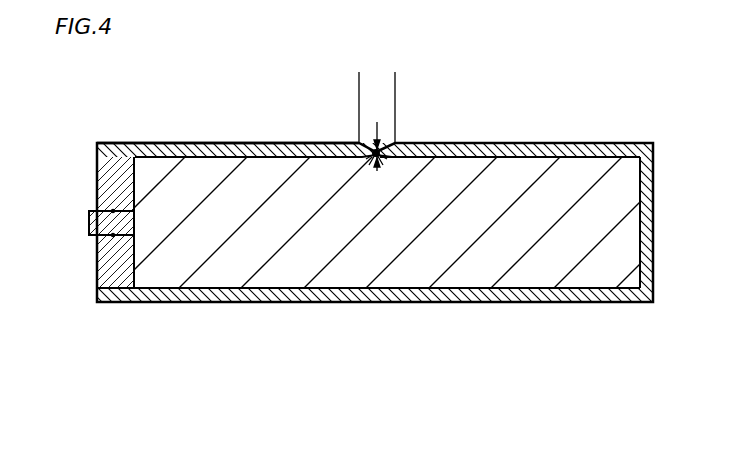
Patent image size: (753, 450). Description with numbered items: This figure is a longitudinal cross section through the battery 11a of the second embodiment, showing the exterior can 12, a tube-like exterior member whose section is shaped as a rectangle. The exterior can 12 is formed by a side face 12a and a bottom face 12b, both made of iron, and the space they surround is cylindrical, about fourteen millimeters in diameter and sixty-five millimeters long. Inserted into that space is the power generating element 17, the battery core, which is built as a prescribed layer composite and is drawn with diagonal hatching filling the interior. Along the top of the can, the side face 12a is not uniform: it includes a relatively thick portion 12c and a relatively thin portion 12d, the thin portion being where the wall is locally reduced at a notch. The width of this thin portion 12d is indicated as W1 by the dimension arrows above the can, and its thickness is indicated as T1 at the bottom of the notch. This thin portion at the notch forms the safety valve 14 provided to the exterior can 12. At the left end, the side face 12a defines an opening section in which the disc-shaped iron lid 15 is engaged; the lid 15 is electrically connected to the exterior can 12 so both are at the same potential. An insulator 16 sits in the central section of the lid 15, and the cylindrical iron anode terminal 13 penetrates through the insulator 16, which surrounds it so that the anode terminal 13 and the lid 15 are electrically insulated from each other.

The battery 11a is at (270, 128).
The exterior can 12 is at (510, 384).
The side face 12a is at (494, 145).
The bottom face 12b is at (655, 232).
The thick portion 12c is at (435, 158).
The thin portion 12d is at (388, 158).
The anode terminal 13 is at (89, 224).
The safety valve 14 is at (353, 135).
The lid 15 is at (115, 163).
The insulator 16 is at (110, 209).
The power generating element 17 is at (580, 188).
The width of the thin portion W1 is at (425, 75).
The thickness of the thin portion T1 is at (400, 143).